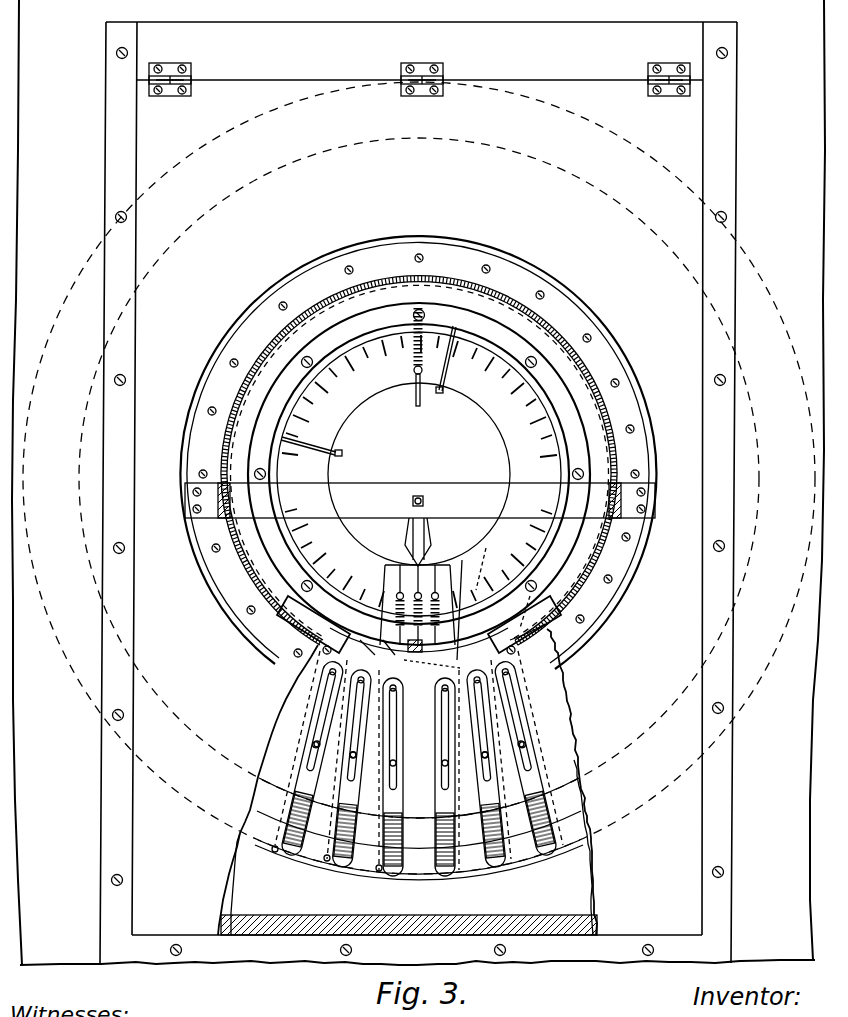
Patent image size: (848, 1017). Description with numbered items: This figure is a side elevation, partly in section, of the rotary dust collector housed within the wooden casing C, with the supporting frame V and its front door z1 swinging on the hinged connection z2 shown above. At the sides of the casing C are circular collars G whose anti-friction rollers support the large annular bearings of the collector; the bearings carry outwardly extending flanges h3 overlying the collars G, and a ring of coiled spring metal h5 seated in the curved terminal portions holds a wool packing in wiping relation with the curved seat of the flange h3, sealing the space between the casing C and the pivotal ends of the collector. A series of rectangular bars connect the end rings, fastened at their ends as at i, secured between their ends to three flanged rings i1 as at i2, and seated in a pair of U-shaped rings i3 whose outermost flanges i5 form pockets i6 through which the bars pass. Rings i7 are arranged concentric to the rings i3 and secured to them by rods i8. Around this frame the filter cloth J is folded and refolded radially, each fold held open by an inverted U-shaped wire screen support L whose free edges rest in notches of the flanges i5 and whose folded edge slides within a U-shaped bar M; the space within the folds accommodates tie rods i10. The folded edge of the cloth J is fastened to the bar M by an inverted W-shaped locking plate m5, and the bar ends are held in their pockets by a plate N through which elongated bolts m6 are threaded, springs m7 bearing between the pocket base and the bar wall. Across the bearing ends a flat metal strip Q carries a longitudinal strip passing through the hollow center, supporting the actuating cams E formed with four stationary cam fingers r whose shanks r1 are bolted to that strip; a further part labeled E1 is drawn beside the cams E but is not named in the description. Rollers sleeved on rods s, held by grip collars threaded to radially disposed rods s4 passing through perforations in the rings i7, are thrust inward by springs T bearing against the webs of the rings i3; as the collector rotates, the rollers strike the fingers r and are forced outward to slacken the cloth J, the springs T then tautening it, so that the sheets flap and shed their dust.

The casing C is at (417, 493).
The supporting frame V is at (591, 47).
The hinged connection z2 is at (192, 80).
The front door z1 is at (419, 478).
The circular collars G is at (643, 436).
The ring of coiled spring metal h5 is at (588, 385).
The outwardly extending flanges h3 is at (594, 438).
The radially disposed rods s4 is at (300, 424).
The rings i7 is at (383, 396).
The flat metal strip Q is at (468, 496).
The rods s is at (413, 372).
The rods i8 is at (444, 377).
The shank r1 is at (424, 554).
The cam surfaces or fingers r is at (385, 580).
The actuating cams E is at (436, 570).
The fastening i2 is at (368, 858).
The U-shaped rings i3 is at (500, 618).
The flanges i5 is at (466, 610).
The flanged rings i1 is at (500, 612).
The fastening i is at (510, 631).
The springs T is at (419, 633).
The pockets i6 is at (370, 651).
The cross link E1 is at (392, 662).
The wire screen support L is at (386, 648).
The filter cloth J is at (302, 766).
The tie rods i10 is at (317, 748).
The U-shaped bars M is at (398, 856).
The plate N is at (466, 870).
The springs m7 is at (290, 850).
The locking plate m5 is at (335, 862).
The elongated bolts m6 is at (386, 870).